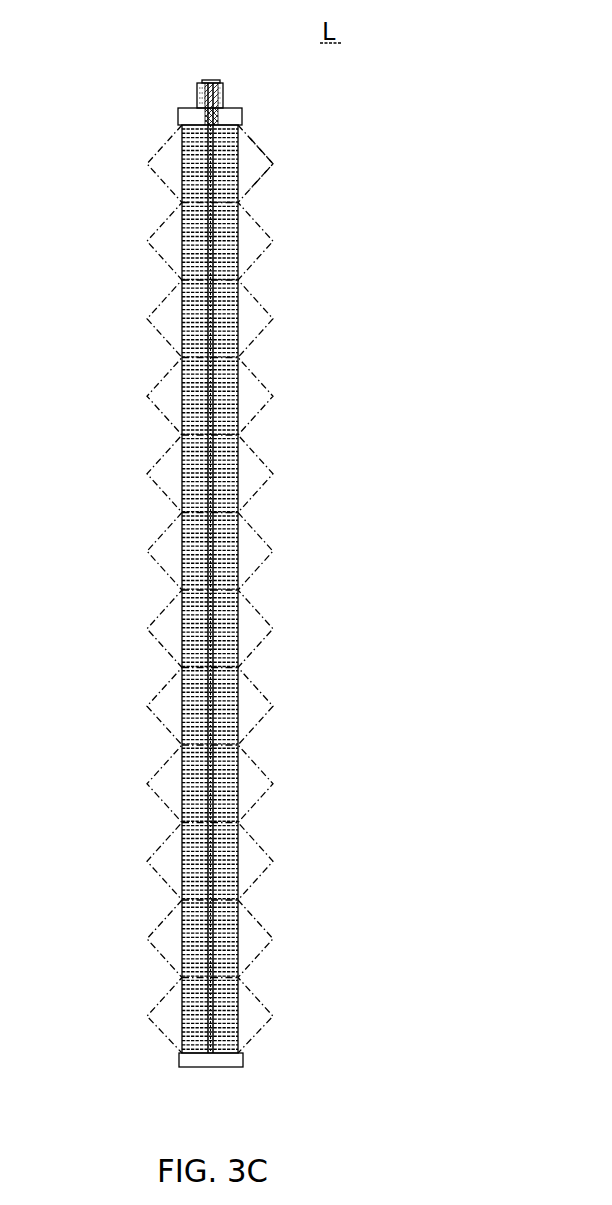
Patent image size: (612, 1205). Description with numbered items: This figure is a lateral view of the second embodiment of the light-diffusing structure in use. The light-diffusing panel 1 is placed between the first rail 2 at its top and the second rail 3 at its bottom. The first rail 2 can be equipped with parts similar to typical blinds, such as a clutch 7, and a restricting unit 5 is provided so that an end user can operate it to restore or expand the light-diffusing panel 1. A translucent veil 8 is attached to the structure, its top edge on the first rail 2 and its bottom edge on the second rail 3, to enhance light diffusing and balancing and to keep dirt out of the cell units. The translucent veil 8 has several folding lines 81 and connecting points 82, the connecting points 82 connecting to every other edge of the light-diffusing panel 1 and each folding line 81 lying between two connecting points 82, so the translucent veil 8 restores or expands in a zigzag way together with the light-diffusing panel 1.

The light-diffusing panel 1 is at (236, 1018).
The first rail 2 is at (228, 113).
The second rail 3 is at (232, 1061).
The restricting unit 5 is at (205, 1030).
The clutch 7 is at (204, 80).
The translucent veil 8 is at (165, 143).
The folding line 81 is at (274, 162).
The connecting point 82 is at (238, 199).